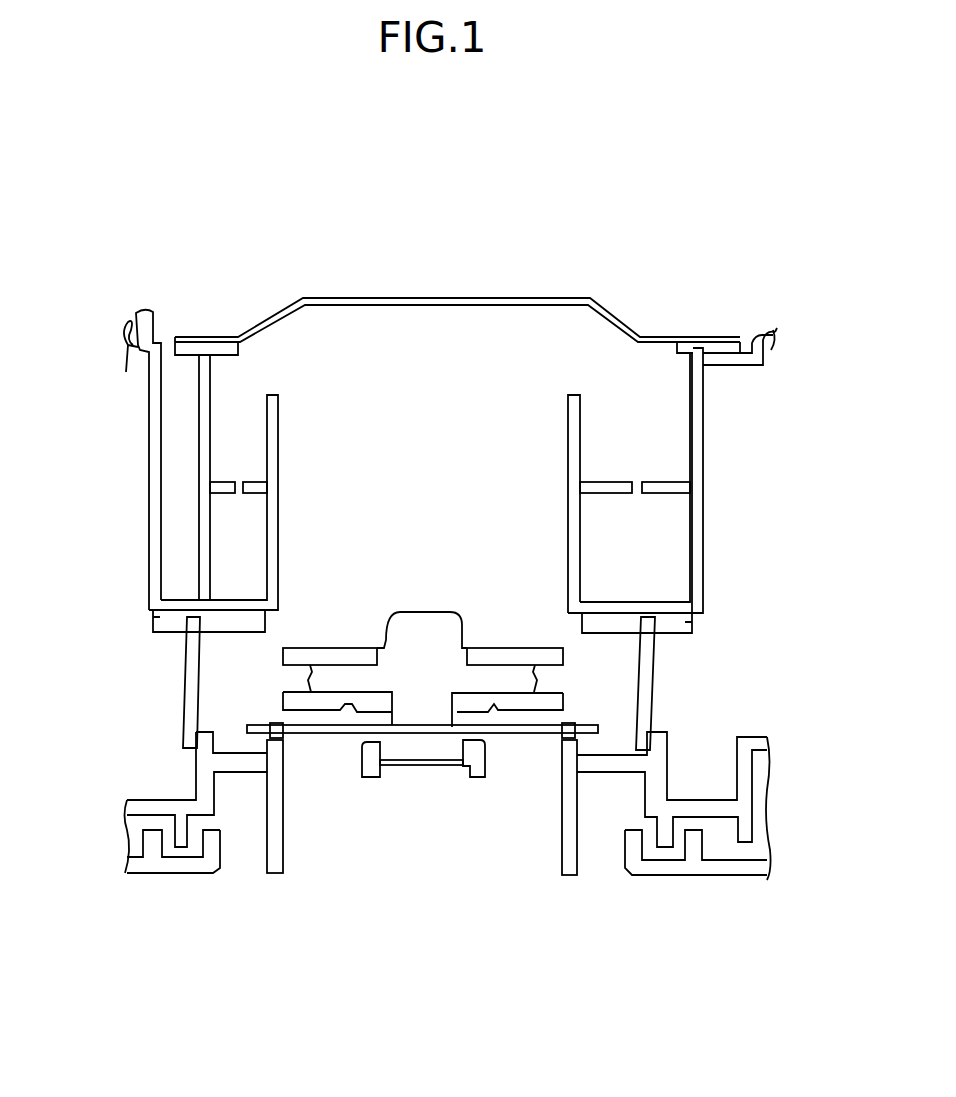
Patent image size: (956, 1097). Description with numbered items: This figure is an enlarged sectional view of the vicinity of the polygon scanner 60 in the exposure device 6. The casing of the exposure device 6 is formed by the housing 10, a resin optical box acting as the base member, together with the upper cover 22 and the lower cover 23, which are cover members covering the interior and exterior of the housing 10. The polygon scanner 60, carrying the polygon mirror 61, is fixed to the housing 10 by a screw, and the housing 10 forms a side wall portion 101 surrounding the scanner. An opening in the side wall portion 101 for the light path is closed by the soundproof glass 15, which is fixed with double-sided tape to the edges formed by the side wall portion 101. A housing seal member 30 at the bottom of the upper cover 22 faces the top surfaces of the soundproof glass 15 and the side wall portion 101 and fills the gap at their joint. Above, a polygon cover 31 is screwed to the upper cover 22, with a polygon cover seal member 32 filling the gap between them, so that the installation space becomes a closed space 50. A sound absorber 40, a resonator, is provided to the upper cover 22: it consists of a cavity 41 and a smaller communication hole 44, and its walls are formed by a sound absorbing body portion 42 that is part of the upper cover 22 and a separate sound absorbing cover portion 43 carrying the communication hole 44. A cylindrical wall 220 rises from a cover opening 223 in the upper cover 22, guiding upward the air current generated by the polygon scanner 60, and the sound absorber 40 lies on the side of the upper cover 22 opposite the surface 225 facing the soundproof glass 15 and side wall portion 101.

The exposure device 6 is at (738, 221).
The housing 10 is at (577, 827).
The soundproof glass 15 is at (183, 700).
The upper cover 22 is at (148, 452).
The lower cover 23 is at (708, 877).
The housing seal member 30 is at (150, 613).
The polygon cover 31 is at (573, 297).
The polygon cover seal member 32 is at (228, 340).
The sound absorber 40 is at (717, 518).
The cavity 41 is at (680, 570).
The sound absorbing body portion 42 is at (700, 548).
The sound absorbing cover portion 43 is at (673, 485).
The communication hole 44 is at (636, 480).
The closed space 50 is at (323, 377).
The polygon scanner 60 is at (422, 680).
The polygon mirror 61 is at (563, 657).
The side wall portion 101 is at (208, 740).
The cylindrical wall 220 is at (547, 382).
The cover opening 223 is at (352, 631).
The surface facing soundproof glass and side wall portion 225 is at (227, 627).